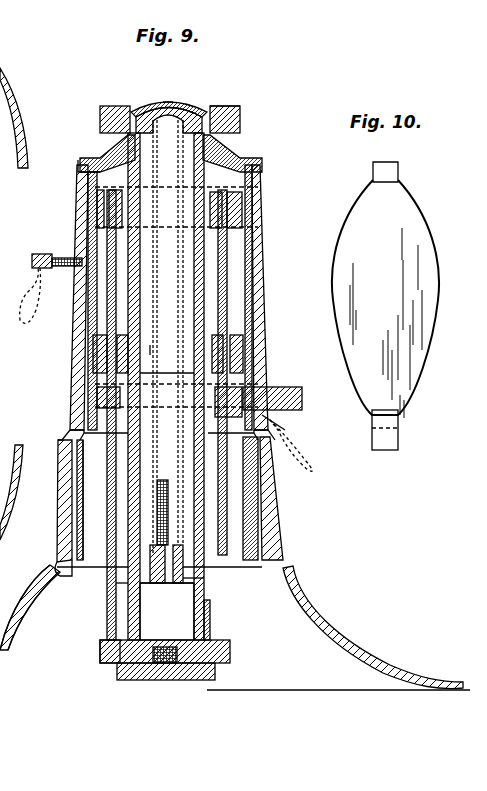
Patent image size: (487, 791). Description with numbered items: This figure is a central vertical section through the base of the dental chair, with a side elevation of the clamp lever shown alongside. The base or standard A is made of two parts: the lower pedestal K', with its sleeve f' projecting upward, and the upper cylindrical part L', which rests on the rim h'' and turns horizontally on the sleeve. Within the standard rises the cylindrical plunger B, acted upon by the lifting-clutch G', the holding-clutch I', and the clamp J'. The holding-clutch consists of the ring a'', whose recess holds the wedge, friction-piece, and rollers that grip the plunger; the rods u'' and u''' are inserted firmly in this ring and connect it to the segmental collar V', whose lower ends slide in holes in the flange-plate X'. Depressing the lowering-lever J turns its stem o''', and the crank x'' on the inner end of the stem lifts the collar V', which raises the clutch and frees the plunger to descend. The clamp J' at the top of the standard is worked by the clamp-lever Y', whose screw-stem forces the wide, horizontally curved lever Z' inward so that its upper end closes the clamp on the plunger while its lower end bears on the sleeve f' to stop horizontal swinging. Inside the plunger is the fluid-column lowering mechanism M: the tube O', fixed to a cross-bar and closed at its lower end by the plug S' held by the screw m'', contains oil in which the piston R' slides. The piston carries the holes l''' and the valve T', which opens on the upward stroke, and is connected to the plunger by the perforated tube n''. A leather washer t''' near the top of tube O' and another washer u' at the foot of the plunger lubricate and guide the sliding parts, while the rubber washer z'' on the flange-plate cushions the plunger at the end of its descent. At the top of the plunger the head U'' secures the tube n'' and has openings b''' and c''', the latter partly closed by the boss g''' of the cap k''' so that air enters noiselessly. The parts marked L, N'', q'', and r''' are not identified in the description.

In FIG. 9, the upper cylindrical part of the base L' is at (144, 286).
In FIG. 9, the cap L is at (170, 105).
In FIG. 9, the opening in head b''' is at (169, 93).
In FIG. 9, the cap k''' is at (169, 106).
In FIG. 9, the boss g''' is at (178, 77).
In FIG. 9, the opening into tube n'' c''' is at (213, 91).
In FIG. 9, the head U'' is at (243, 123).
In FIG. 9, the collar N'' is at (102, 138).
In FIG. 9, the collar flange q'' is at (72, 159).
In FIG. 9, the clamp J' is at (255, 153).
In FIG. 9, the plunger B is at (210, 252).
In FIG. 9, the dashed line r''' is at (190, 179).
In FIG. 9, the leather washer t''' is at (159, 222).
In FIG. 9, the ring of holding-clutch a'' is at (190, 209).
In FIG. 9, the holding-clutch I' is at (158, 297).
In FIG. 9, the rod u'' is at (178, 415).
In FIG. 9, the clamp-lever Y' is at (21, 295).
In FIG. 9, the tube of fluid column O' is at (194, 448).
In FIG. 9, the clamp lever Z' is at (142, 354).
In FIG. 10, the clamp lever Z' is at (385, 306).
In FIG. 9, the rod or tube connecting piston to plunger n'' is at (165, 342).
In FIG. 9, the lifting-clutch G' is at (217, 356).
In FIG. 9, the segmental collar V' is at (150, 399).
In FIG. 9, the stem of lowering-lever o''' is at (290, 398).
In FIG. 9, the crank or eccentric x'' is at (155, 439).
In FIG. 9, the lowering-lever J is at (302, 444).
In FIG. 9, the sleeve f' is at (166, 499).
In FIG. 9, the base or standard A is at (60, 522).
In FIG. 9, the rod u''' is at (99, 500).
In FIG. 9, the holes in piston l''' is at (203, 514).
In FIG. 9, the projecting rim or flange on pedestal h'' is at (64, 605).
In FIG. 9, the piston R' is at (222, 577).
In FIG. 9, the valve T' is at (221, 589).
In FIG. 9, the pedestal K' is at (338, 628).
In FIG. 9, the leather washer u' is at (104, 608).
In FIG. 9, the fluid-column lowering mechanism M is at (167, 611).
In FIG. 9, the plug S' is at (230, 620).
In FIG. 9, the flange-plate X' is at (184, 651).
In FIG. 9, the screw m'' is at (166, 681).
In FIG. 9, the rubber washer z'' is at (118, 669).